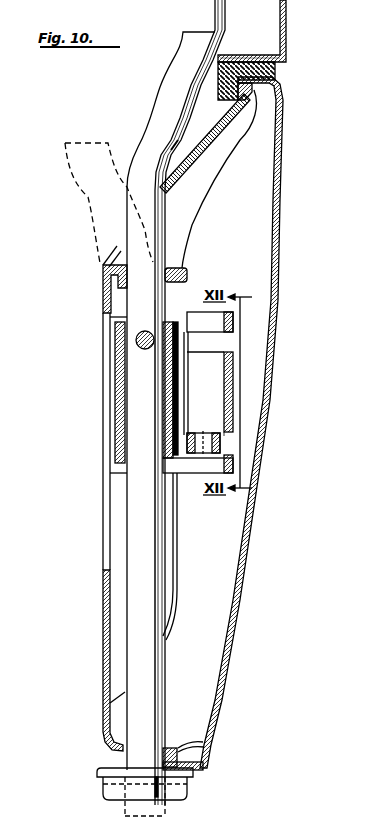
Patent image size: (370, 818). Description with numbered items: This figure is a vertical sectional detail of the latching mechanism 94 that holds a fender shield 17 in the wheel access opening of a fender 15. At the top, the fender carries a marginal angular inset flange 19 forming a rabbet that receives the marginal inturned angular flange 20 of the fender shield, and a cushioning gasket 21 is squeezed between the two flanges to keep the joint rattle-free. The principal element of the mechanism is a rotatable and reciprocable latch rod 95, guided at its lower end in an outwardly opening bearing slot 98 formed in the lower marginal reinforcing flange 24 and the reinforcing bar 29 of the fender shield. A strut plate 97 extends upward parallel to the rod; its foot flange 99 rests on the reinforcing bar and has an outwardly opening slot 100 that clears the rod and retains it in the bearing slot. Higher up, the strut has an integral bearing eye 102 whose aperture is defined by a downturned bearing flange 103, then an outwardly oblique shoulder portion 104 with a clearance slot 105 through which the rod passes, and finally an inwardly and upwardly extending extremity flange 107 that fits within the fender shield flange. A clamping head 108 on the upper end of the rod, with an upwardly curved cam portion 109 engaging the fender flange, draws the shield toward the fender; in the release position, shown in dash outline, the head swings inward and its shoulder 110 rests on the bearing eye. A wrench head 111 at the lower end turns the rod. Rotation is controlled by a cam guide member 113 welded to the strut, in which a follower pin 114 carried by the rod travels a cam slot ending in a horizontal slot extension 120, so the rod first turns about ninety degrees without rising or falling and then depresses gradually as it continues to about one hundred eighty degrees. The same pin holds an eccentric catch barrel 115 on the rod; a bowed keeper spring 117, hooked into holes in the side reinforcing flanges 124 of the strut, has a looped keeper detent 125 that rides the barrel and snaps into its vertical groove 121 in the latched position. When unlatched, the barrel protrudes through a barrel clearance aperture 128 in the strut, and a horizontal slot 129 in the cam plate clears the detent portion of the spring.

The fender 15 is at (286, 22).
The fender shield 17 is at (268, 366).
The marginal angular inset flange 19 is at (235, 57).
The marginal inturned angular flange 20 is at (262, 82).
The cushioning gasket 21 is at (272, 70).
The lower marginal reinforcing flange 24 is at (192, 760).
The reinforcing bar 29 is at (190, 746).
The latching mechanism 94 is at (230, 245).
The latch rod 95 is at (150, 562).
The strut plate 97 is at (104, 612).
The bearing slot 98 is at (123, 760).
The foot flange 99 is at (112, 733).
The outwardly opening slot 100 is at (172, 747).
The bearing eye 102 is at (182, 254).
The downturned bearing flange 103 is at (185, 277).
The outwardly oblique shoulder portion 104 is at (190, 172).
The clearance slot 105 is at (118, 244).
The extremity flange 107 is at (250, 90).
The clamping head 108 is at (173, 113).
The upwardly curved cam portion 109 is at (220, 54).
The shoulder 110 is at (175, 148).
The wrench head 111 is at (180, 788).
The cam guide member 113 is at (233, 400).
The follower pin 114 is at (137, 344).
The catch barrel 115 is at (172, 410).
The keeper spring 117 is at (220, 445).
The horizontal slot extension 120 is at (218, 350).
The vertical groove 121 is at (182, 425).
The side reinforcing flanges 124 is at (171, 528).
The keeper detent 125 is at (190, 473).
The barrel clearance aperture 128 is at (105, 522).
The horizontal slot 129 is at (233, 430).